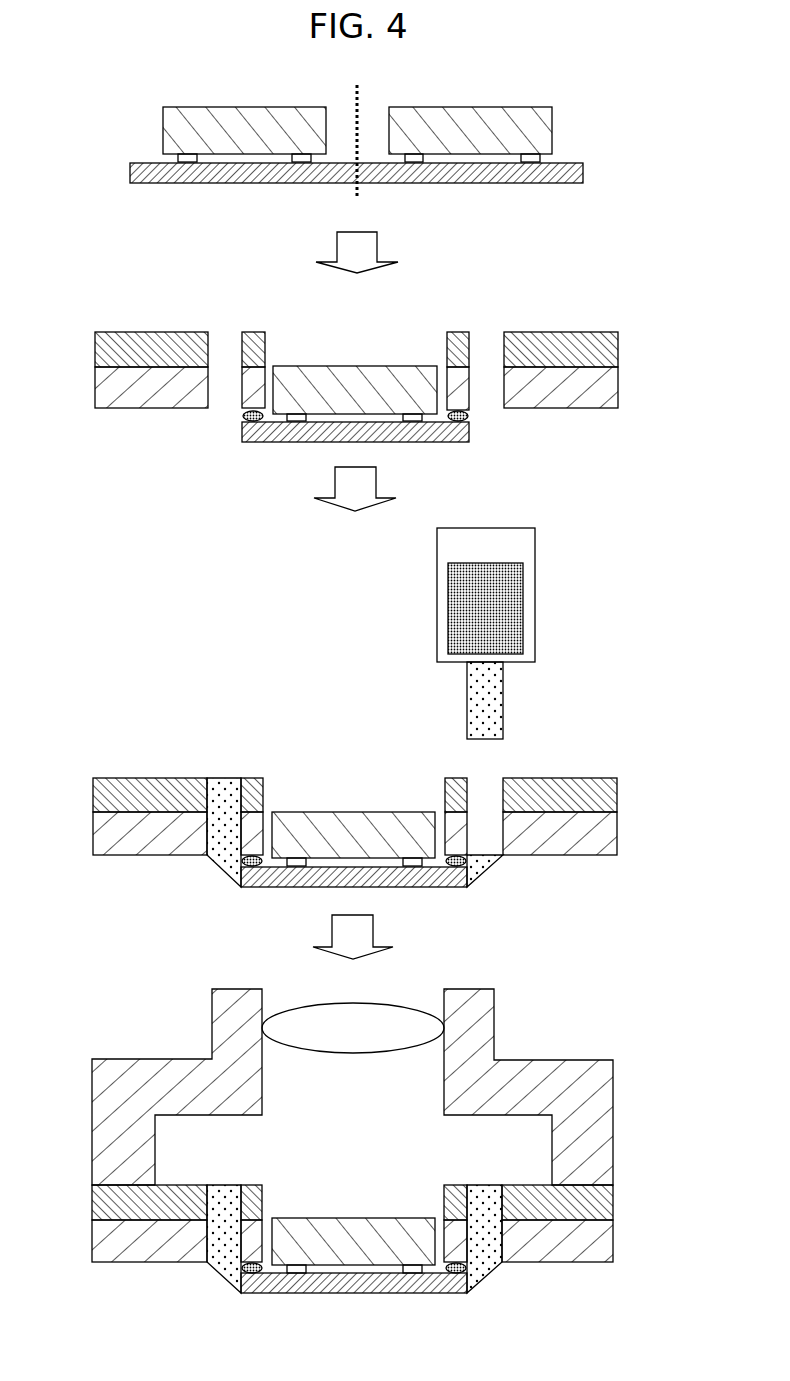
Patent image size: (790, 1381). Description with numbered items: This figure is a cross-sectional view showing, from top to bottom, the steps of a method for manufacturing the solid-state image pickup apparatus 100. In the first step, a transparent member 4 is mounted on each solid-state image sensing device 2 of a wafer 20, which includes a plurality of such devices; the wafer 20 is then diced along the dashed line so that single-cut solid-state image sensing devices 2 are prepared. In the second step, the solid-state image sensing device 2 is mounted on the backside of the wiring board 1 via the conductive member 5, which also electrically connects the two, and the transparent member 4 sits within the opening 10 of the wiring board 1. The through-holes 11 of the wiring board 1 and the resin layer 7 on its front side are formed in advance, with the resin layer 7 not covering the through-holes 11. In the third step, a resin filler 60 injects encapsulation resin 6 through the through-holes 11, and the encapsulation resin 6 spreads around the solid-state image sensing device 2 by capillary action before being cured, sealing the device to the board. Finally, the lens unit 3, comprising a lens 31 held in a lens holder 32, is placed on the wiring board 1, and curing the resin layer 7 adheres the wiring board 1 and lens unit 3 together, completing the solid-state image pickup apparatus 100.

The wiring board 1 is at (610, 388).
The solid-state image sensing device 2 is at (583, 168).
The lens unit 3 is at (352, 1066).
The transparent member 4 is at (246, 121).
The conductive member 5 is at (470, 415).
The encapsulation resin 6 is at (490, 703).
The resin layer 7 is at (618, 350).
The opening 10 is at (291, 347).
The through-holes 11 is at (486, 347).
The wafer 20 is at (644, 155).
The lens 31 is at (400, 1012).
The lens holder 32 is at (487, 1016).
The resin filler 60 is at (535, 595).
The solid-state image pickup apparatus 100 is at (402, 1113).